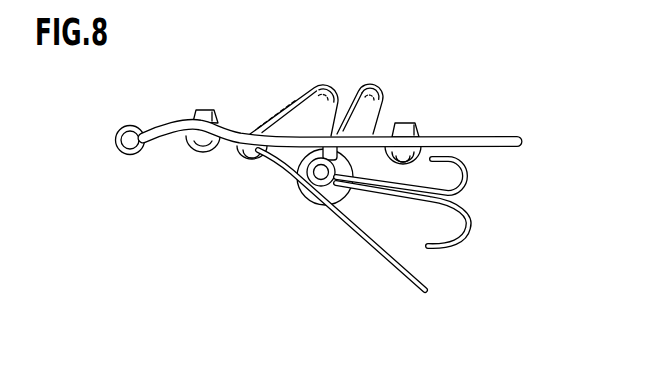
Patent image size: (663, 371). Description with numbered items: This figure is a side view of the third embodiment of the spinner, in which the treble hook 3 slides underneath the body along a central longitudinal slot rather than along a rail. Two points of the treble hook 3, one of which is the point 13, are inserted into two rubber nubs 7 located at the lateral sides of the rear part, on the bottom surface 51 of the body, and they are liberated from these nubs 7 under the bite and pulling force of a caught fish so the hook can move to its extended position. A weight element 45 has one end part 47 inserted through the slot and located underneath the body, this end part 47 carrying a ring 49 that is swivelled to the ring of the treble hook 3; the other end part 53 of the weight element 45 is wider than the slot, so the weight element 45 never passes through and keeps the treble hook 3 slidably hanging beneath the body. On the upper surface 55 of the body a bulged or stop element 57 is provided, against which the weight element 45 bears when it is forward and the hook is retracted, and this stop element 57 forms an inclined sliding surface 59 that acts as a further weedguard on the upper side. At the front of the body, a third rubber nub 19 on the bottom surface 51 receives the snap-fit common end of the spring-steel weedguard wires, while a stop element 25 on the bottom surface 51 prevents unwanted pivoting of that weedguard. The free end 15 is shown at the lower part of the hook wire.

The treble hook 3 is at (392, 196).
The rubber nub 7 is at (408, 148).
The point 13 is at (433, 157).
The free end of wire 15 is at (410, 246).
The third rubber nub 19 is at (177, 161).
The stop element 25 is at (243, 158).
The weight element 45 is at (390, 74).
The end part 47 is at (347, 185).
The ring 49 is at (305, 160).
The bottom surface 51 is at (364, 158).
The other end part 53 is at (365, 105).
The upper surface 55 is at (394, 118).
The bulged or stop element 57 is at (315, 110).
The inclined sliding surface 59 is at (291, 131).